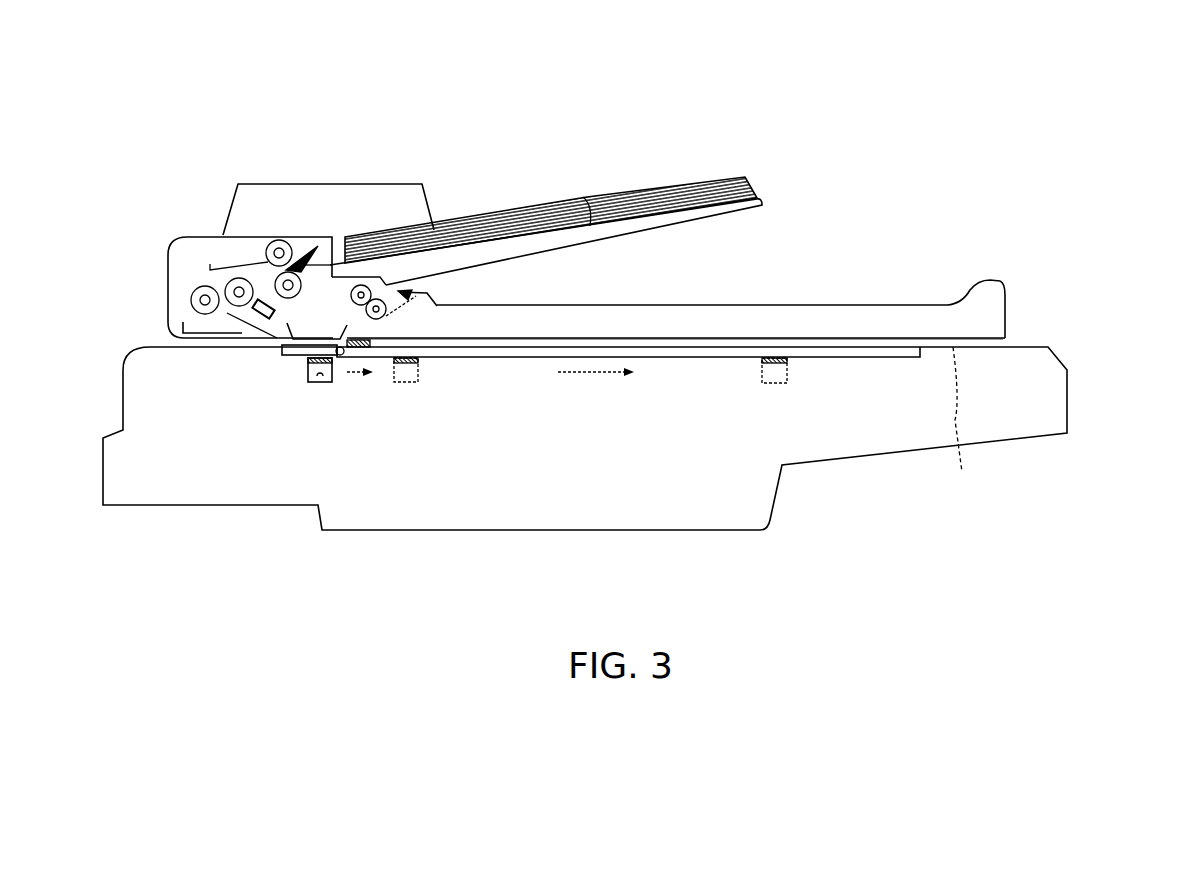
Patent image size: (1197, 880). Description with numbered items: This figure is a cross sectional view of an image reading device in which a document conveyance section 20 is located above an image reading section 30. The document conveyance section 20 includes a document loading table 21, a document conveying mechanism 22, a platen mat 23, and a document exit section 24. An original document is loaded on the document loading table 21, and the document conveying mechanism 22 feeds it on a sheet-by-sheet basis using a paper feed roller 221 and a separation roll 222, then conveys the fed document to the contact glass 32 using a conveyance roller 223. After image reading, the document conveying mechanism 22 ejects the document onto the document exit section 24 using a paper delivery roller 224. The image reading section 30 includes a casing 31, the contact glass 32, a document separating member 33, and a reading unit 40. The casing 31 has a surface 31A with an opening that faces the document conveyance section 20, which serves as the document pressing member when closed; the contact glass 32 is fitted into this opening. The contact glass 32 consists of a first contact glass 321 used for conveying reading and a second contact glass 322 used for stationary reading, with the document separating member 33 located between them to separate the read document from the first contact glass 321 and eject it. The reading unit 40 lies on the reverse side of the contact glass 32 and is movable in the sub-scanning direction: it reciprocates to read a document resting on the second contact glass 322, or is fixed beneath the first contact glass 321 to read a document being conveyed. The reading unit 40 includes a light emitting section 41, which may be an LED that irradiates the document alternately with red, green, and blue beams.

The document conveyance section 20 is at (1020, 287).
The document loading table 21 is at (757, 196).
The document conveying mechanism 22 is at (196, 258).
The paper feed roller 221 is at (293, 238).
The separation roll 222 is at (326, 270).
The conveyance roller 223 is at (226, 286).
The paper delivery roller 224 is at (425, 300).
The platen mat 23 is at (657, 338).
The document exit section 24 is at (843, 305).
The image reading section 30 is at (1067, 350).
The casing 31 is at (1068, 396).
The surface 31A is at (959, 425).
The contact glass 32 is at (508, 372).
The first contact glass 321 is at (282, 357).
The second contact glass 322 is at (742, 356).
The document separating member 33 is at (342, 358).
The reading unit 40 is at (308, 380).
The light emitting section 41 is at (323, 383).